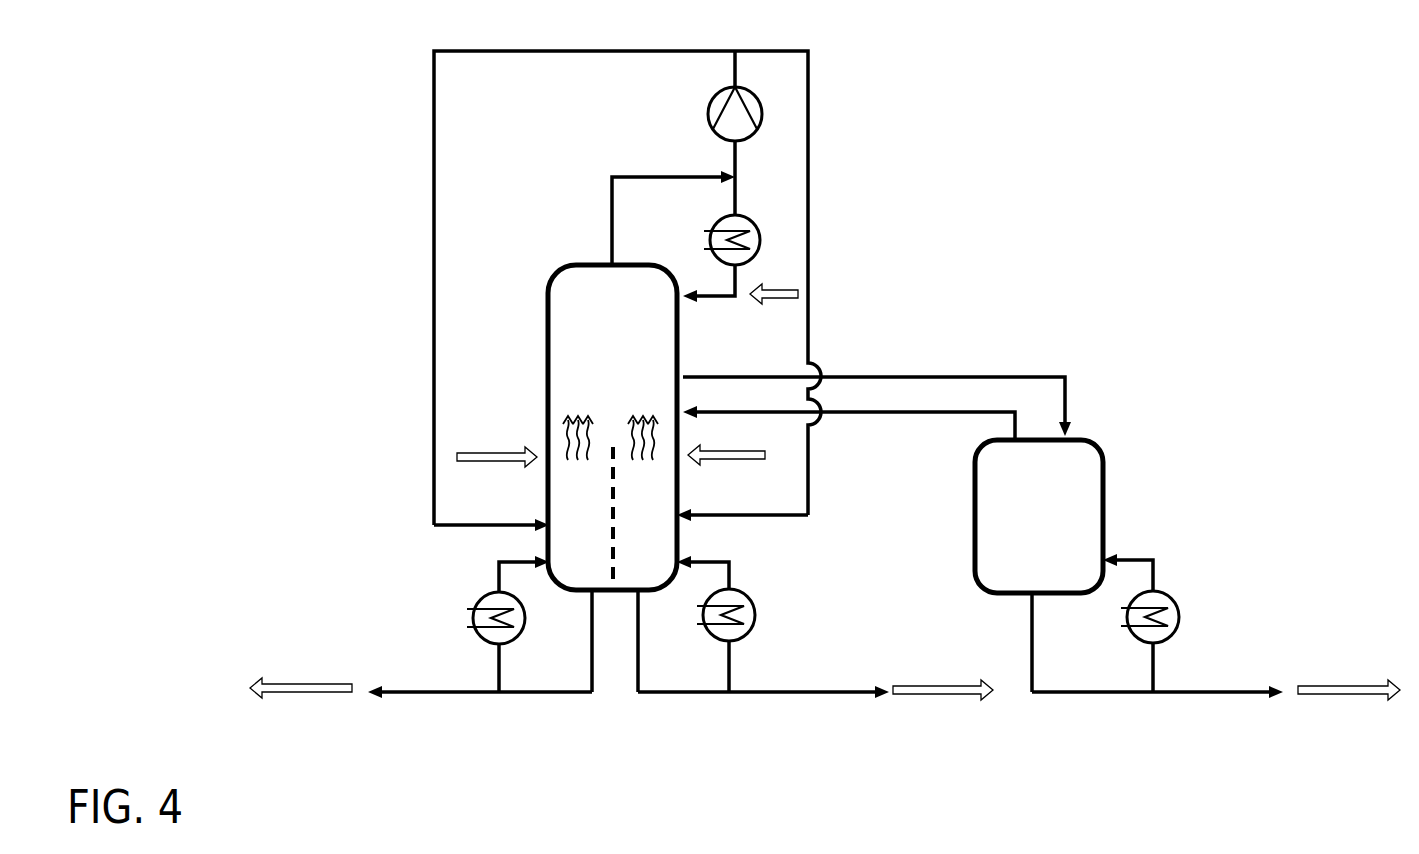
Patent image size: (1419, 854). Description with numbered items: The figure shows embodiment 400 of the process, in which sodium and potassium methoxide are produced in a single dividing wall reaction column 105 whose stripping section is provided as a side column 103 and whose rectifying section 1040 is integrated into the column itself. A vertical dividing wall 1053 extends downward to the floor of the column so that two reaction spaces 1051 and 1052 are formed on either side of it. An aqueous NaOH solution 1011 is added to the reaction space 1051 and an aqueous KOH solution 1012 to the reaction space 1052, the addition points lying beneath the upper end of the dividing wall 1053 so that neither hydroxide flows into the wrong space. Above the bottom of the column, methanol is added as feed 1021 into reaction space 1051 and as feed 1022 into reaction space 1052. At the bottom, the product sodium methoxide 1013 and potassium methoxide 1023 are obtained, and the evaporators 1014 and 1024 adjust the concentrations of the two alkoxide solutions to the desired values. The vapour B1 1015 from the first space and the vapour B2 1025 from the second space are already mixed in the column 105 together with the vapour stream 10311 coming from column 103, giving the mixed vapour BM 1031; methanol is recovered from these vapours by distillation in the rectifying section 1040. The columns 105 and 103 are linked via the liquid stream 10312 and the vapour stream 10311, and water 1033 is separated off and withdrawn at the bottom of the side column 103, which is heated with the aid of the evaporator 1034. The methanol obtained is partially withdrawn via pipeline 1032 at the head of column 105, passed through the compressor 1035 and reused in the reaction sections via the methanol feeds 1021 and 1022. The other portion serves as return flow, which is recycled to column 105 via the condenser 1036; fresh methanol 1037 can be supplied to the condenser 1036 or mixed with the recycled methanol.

The embodiment 400 is at (343, 366).
The reaction column 105 is at (532, 323).
The rectifying section 1040 is at (612, 333).
The dividing wall 1053 is at (613, 592).
The vapour B1 1015 is at (560, 425).
The mixed vapour BM 1031 is at (612, 405).
The vapour B2 1025 is at (623, 420).
The NaOH solution 1011 is at (447, 457).
The KOH solution 1012 is at (782, 451).
The methanol feed 1021 is at (491, 515).
The methanol feed 1022 is at (742, 503).
The reaction space 1051 is at (600, 540).
The reaction space 1052 is at (658, 540).
The evaporator 1014 is at (458, 615).
The evaporator 1024 is at (765, 615).
The sodium methoxide 1013 is at (421, 675).
The potassium methoxide 1023 is at (815, 677).
The pipeline 1032 is at (673, 204).
The compressor 1035 is at (780, 117).
The condenser 1036 is at (785, 245).
The fresh methanol 1037 is at (800, 297).
The liquid stream 10312 is at (877, 391).
The vapour stream 10311 is at (849, 410).
The side column 103 is at (1113, 503).
The evaporator 1034 is at (1192, 617).
The water 1033 is at (1216, 677).